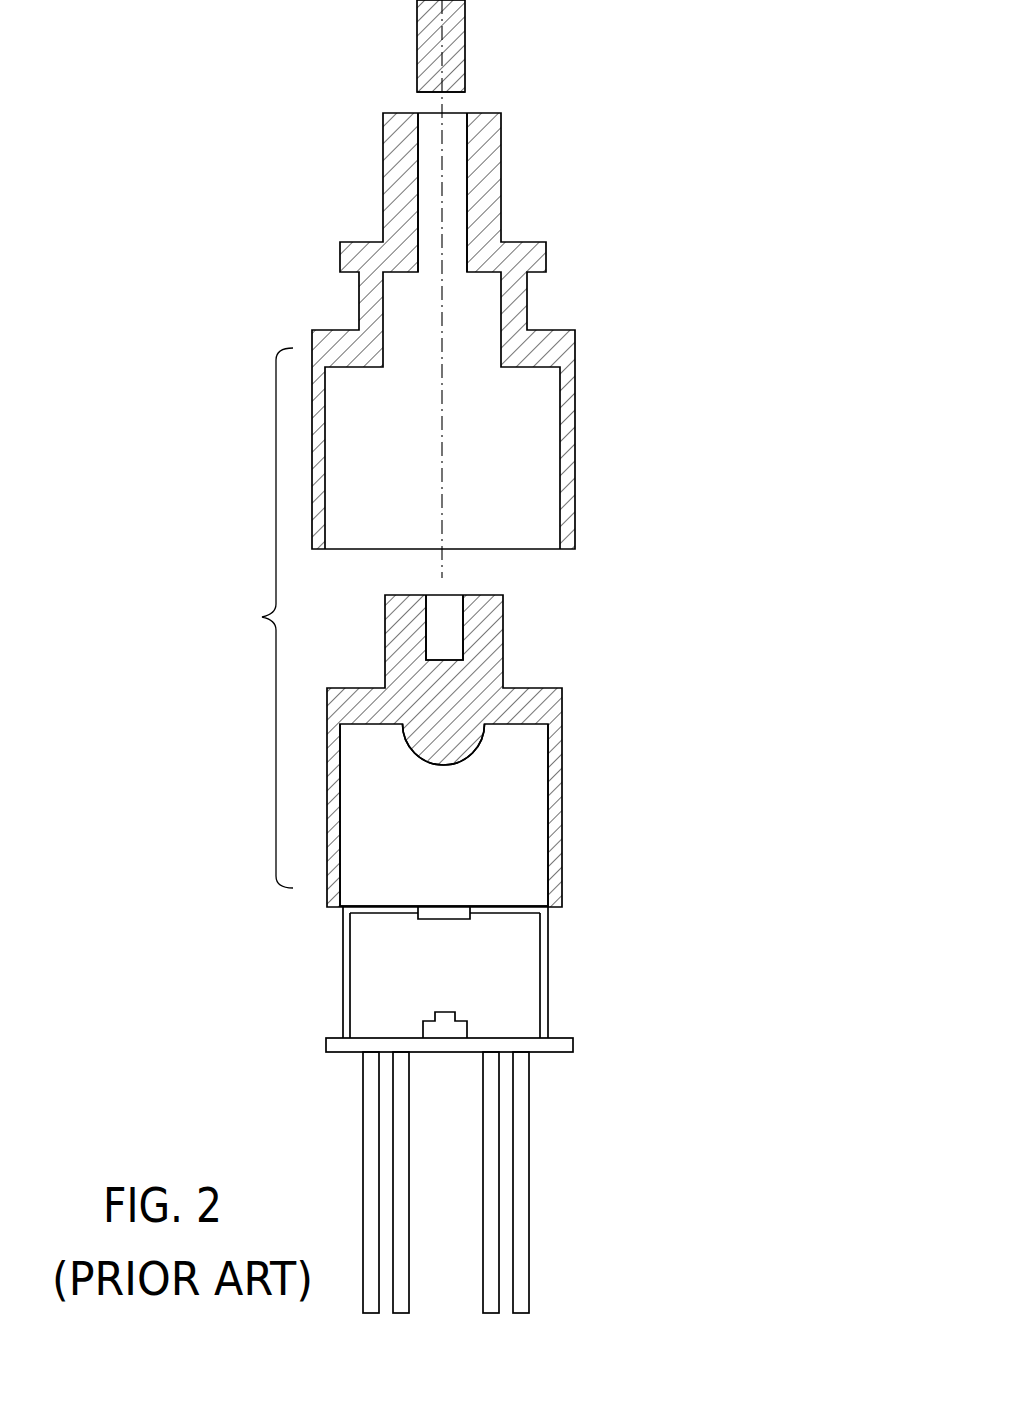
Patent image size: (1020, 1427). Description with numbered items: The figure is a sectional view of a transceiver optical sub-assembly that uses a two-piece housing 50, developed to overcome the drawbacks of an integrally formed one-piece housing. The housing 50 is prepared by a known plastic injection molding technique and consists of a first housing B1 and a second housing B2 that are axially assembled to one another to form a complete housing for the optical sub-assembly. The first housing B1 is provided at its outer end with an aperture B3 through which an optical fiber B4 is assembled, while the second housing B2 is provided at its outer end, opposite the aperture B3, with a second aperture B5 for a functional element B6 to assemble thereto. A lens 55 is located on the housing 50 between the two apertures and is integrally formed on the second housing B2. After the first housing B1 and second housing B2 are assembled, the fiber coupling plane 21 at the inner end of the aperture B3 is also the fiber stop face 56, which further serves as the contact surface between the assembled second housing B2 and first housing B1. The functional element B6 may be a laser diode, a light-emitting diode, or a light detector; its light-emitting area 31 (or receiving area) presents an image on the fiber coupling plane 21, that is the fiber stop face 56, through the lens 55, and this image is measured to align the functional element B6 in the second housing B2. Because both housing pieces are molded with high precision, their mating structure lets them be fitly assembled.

The optical fiber B4 is at (543, 46).
The fiber coupling plane 21 is at (442, 93).
The aperture B3 is at (515, 165).
The first housing B1 is at (517, 331).
The housing 50 is at (260, 640).
The second housing B2 is at (520, 751).
The fiber stop face 56 is at (487, 593).
The lens 55 is at (450, 736).
The second aperture B5 is at (525, 815).
The functional element B6 is at (529, 1109).
The light-emitting area 31 is at (435, 1012).